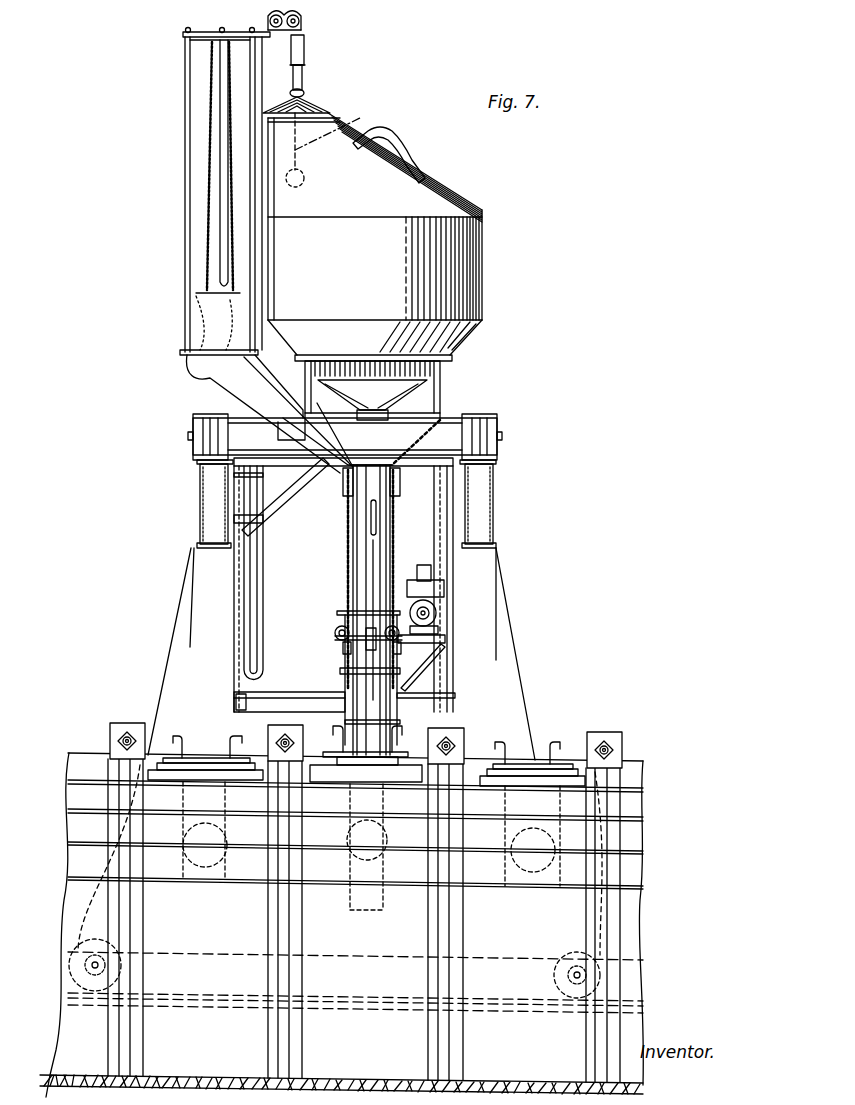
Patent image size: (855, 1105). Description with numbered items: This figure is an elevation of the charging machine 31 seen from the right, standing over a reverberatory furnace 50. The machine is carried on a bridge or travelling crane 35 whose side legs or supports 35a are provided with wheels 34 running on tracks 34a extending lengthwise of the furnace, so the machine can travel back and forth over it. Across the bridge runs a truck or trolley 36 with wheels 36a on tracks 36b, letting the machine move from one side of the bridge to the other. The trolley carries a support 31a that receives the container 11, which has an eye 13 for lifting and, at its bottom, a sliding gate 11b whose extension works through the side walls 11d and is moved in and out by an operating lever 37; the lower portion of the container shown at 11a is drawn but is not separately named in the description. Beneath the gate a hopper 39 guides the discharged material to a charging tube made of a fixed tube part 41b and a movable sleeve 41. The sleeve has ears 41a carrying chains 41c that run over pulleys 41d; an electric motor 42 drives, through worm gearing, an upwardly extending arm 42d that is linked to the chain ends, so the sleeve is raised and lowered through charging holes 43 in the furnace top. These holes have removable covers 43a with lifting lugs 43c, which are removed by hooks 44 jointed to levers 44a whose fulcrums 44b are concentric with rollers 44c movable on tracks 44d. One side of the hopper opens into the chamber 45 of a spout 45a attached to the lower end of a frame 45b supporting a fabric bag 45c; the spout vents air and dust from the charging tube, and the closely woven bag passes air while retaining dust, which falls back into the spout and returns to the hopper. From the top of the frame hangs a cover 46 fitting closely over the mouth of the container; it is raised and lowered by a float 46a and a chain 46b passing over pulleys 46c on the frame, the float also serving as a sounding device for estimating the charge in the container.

The container 11 is at (482, 270).
The lower hopper casing 11a is at (438, 373).
The sliding gate 11b is at (392, 422).
The side walls 11d is at (296, 392).
The eye 13 is at (418, 165).
The charging machine 31 is at (280, 674).
The support 31a is at (445, 420).
The wheels 34 is at (68, 978).
The tracks 34a is at (372, 1014).
The bridge or travelling crane 35 is at (200, 518).
The side legs or supports 35a is at (172, 650).
The truck or trolley 36 is at (455, 420).
The wheels 36a is at (193, 435).
The tracks 36b is at (197, 463).
The operating lever 37 is at (366, 560).
The hopper 39 is at (405, 440).
The movable sleeve 41 is at (350, 690).
The ears 41a is at (345, 682).
The fixed portion or tube part 41b is at (362, 593).
The chains 41c is at (348, 546).
The pulleys 41d is at (343, 505).
The electric motor 42 is at (437, 615).
The upwardly extending arm 42d is at (400, 556).
The charging holes 43 is at (188, 833).
The covers 43a is at (185, 750).
The lifting lugs 43c is at (175, 736).
The hooks 44 is at (345, 722).
The levers 44a is at (343, 648).
The fulcrums 44b is at (337, 612).
The rollers 44c is at (336, 631).
The tracks 44d is at (448, 652).
The chamber 45 is at (308, 434).
The spout 45a is at (230, 385).
The frame 45b is at (185, 208).
The fabric bag 45c is at (222, 262).
The cover 46 is at (318, 108).
The float 46a is at (303, 184).
The chain 46b is at (273, 283).
The pulleys 46c is at (303, 19).
The reverberatory furnace 50 is at (72, 764).